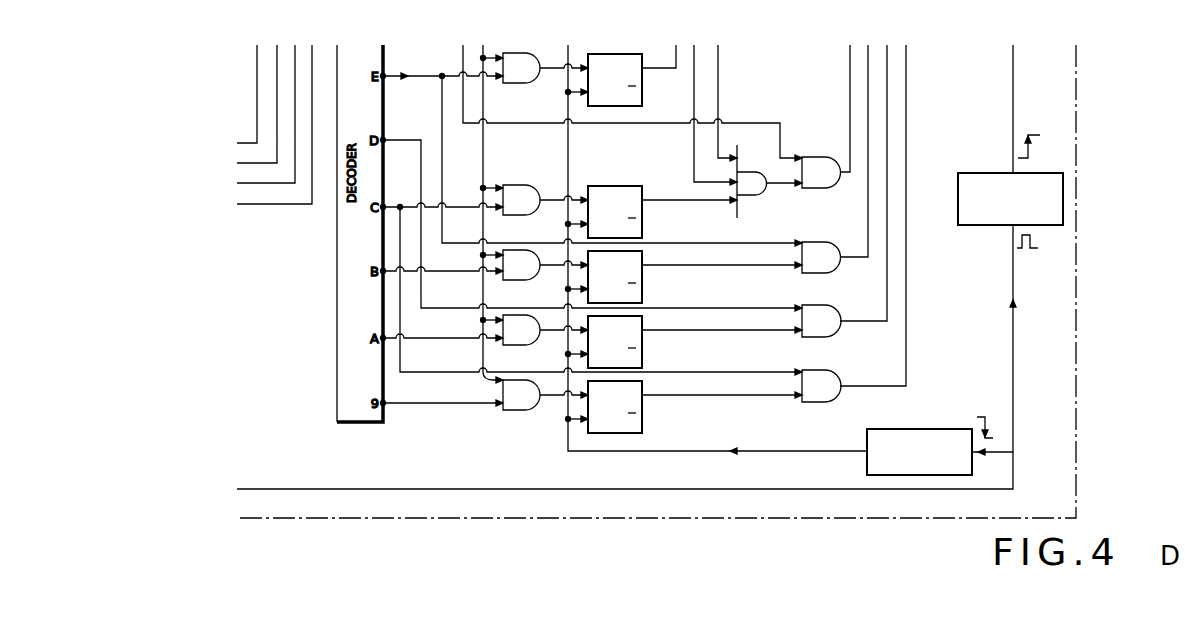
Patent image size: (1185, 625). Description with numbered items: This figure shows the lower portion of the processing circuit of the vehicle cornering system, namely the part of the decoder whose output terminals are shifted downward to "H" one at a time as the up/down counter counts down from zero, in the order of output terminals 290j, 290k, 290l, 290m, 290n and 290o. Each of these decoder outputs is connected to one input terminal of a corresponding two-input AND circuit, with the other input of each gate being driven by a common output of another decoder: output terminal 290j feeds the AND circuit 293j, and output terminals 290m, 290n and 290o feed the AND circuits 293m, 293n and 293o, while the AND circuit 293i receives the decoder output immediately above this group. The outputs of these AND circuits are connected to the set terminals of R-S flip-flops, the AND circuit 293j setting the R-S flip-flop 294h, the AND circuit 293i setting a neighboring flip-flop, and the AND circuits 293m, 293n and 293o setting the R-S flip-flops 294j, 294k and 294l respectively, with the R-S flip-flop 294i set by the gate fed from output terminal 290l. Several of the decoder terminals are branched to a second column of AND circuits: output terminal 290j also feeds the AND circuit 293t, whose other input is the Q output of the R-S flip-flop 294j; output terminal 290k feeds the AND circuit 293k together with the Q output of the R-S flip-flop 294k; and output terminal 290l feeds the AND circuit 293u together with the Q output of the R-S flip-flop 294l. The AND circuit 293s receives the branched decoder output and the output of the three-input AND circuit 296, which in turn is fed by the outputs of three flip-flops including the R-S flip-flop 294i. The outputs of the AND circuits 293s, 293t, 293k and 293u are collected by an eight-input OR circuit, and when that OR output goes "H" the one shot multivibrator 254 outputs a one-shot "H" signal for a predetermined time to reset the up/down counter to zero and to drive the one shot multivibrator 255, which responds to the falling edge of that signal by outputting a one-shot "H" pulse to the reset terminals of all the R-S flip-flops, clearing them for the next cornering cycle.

The output terminal 290j is at (383, 76).
The output terminal 290k is at (383, 140).
The output terminal 290l is at (383, 207).
The output terminal 290m is at (388, 268).
The output terminal 290n is at (385, 340).
The output terminal 290o is at (385, 405).
The AND circuit 293j is at (528, 83).
The AND circuit 293i is at (528, 215).
The AND circuit 293m is at (525, 280).
The AND circuit 293n is at (525, 345).
The AND circuit 293o is at (525, 410).
The AND circuit 293s is at (818, 188).
The AND circuit 293t is at (836, 270).
The AND circuit 293k is at (836, 334).
The AND circuit 293u is at (836, 399).
The R-S flip-flop 294h is at (642, 92).
The R-S flip-flop 294i is at (642, 224).
The R-S flip-flop 294j is at (642, 289).
The R-S flip-flop 294k is at (642, 354).
The R-S flip-flop 294l is at (642, 419).
The three-input AND circuit 296 is at (755, 195).
The one shot multivibrator 254 is at (972, 173).
The one shot multivibrator 255 is at (962, 429).